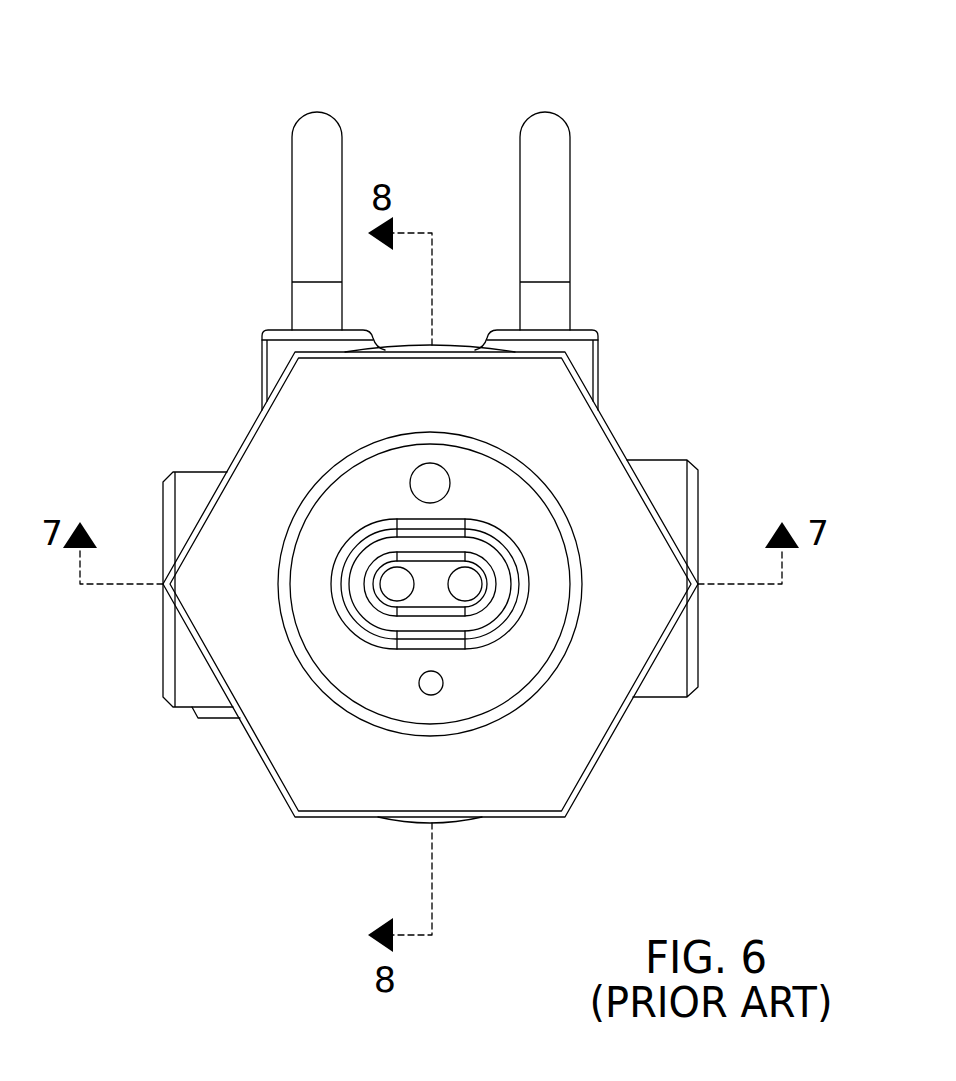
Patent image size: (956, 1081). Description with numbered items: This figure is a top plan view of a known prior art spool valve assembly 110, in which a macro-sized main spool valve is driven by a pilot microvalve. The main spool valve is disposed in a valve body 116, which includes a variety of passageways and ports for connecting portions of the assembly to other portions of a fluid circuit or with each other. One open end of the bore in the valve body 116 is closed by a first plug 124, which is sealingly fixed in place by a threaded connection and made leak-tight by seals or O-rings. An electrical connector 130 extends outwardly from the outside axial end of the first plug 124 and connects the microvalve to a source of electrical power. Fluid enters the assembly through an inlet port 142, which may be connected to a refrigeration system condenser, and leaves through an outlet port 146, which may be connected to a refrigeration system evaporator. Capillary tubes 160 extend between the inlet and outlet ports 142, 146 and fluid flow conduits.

The spool valve assembly 110 is at (137, 190).
The valve body 116 is at (212, 717).
The first plug 124 is at (297, 773).
The electrical connector 130 is at (433, 592).
The inlet port 142 is at (662, 467).
The outlet port 146 is at (163, 687).
The capillary tubes 160 is at (317, 128).